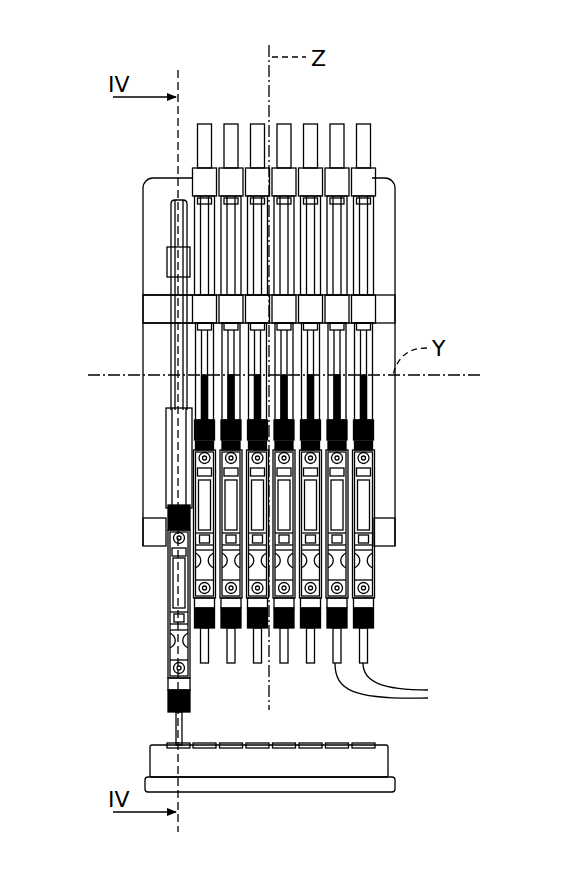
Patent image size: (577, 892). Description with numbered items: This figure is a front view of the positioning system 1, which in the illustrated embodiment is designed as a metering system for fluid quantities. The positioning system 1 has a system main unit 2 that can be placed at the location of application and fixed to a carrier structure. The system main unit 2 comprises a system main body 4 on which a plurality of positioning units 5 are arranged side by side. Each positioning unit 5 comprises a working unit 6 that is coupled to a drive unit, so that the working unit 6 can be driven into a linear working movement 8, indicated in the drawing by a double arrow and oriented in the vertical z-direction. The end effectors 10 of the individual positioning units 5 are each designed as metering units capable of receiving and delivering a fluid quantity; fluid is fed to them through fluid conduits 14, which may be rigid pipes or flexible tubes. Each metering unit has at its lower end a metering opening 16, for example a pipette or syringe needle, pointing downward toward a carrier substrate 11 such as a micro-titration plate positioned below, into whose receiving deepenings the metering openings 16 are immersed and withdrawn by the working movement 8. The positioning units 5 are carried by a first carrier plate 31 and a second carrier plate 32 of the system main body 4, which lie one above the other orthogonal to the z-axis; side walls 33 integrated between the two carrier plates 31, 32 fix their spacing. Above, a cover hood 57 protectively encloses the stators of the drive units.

The positioning system 1 is at (412, 120).
The system main unit 2 is at (141, 303).
The system main body 4 is at (160, 316).
The positioning unit 5 is at (343, 641).
The working unit 6 is at (270, 553).
The linear working movement 8 is at (153, 676).
The end effector 10 is at (346, 604).
The carrier substrate 11 is at (388, 758).
The fluid conduit 14 is at (335, 268).
The metering opening 16 is at (396, 688).
The first carrier plate 31 is at (388, 311).
The second carrier plate 32 is at (160, 530).
The side wall 33 is at (142, 424).
The cover hood 57 is at (388, 212).